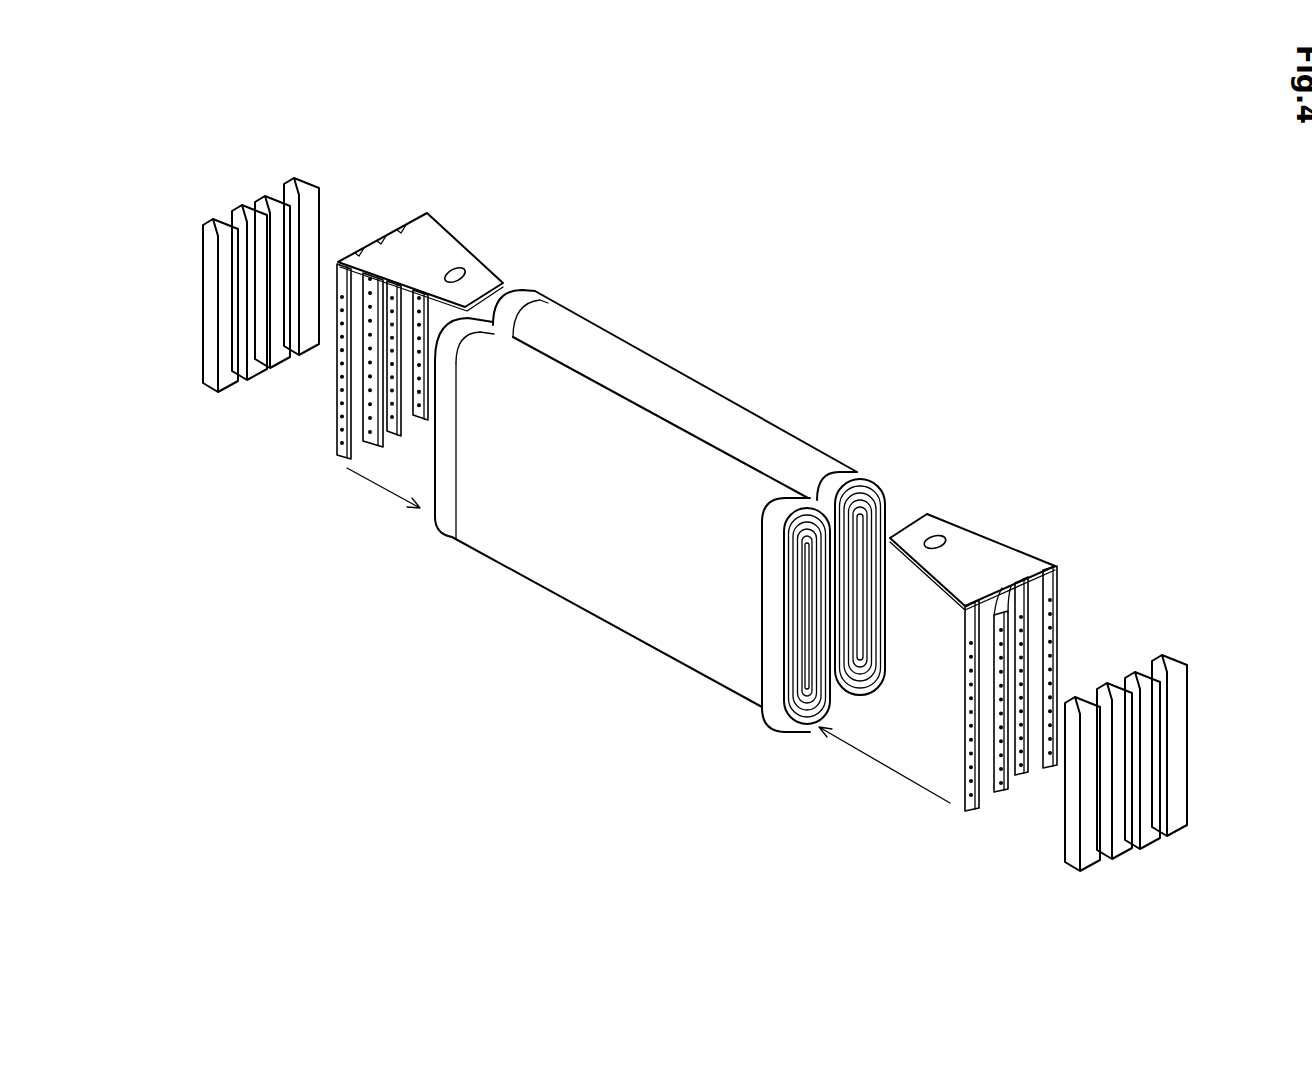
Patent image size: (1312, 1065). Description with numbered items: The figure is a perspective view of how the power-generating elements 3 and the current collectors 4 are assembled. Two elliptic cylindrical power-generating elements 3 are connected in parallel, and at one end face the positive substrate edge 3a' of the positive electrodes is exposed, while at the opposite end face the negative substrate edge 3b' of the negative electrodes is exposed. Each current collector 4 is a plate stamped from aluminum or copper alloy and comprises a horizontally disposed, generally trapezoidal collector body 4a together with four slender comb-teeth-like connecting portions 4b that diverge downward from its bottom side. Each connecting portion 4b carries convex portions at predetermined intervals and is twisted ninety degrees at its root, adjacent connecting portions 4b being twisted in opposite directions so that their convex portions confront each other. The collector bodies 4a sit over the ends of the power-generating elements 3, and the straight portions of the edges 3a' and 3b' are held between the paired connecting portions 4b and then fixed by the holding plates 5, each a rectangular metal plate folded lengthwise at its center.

The power-generating element 3 is at (688, 383).
The positive substrate edge 3a' is at (812, 589).
The negative substrate edge 3b' is at (518, 382).
The current collector 4 is at (381, 213).
The collector body 4a is at (453, 246).
The connecting portion 4b is at (337, 421).
The holding plate 5 is at (248, 203).